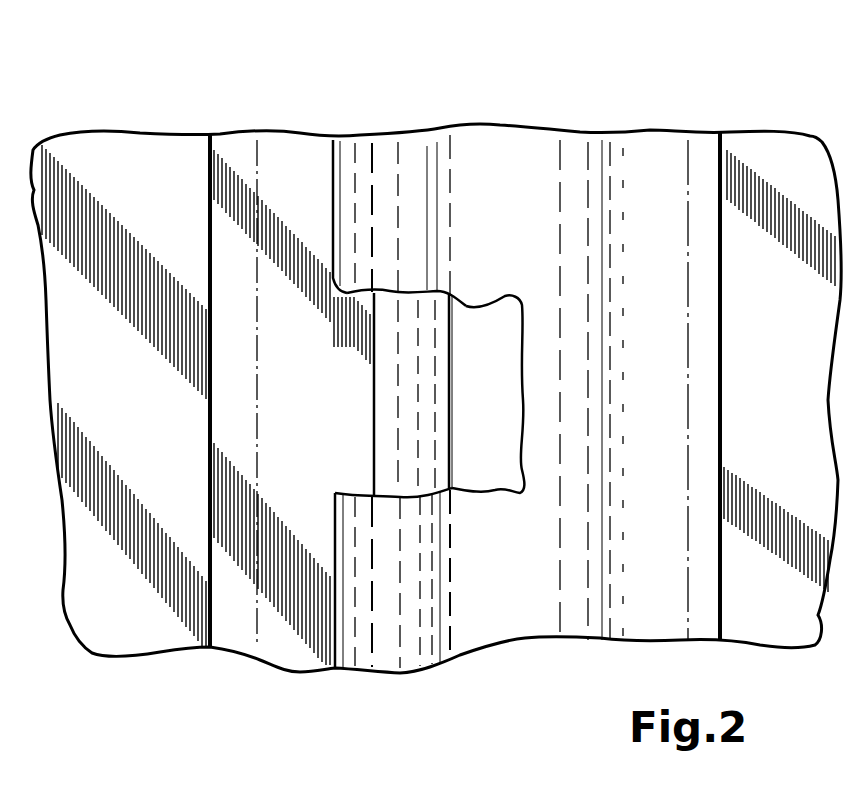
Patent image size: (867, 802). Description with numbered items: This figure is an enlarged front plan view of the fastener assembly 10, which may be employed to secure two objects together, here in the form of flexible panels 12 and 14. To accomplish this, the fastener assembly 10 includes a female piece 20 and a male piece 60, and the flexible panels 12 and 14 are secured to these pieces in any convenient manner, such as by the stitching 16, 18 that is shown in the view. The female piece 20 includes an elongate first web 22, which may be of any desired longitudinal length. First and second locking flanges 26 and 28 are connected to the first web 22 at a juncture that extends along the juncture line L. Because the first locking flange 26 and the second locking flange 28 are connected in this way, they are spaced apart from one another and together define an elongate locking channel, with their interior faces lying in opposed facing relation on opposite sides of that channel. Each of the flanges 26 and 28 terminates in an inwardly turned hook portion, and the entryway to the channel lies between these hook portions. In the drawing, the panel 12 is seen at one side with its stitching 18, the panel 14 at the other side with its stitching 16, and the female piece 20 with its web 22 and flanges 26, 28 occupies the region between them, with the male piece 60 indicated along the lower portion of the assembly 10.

The fastener assembly 10 is at (524, 73).
The flexible panel 12 is at (128, 405).
The flexible panel 14 is at (780, 414).
The stitching 16 is at (690, 313).
The stitching 18 is at (257, 300).
The female piece 20 is at (505, 625).
The first web 22 is at (648, 162).
The first locking flange 26 is at (475, 140).
The second locking flange 28 is at (478, 337).
The male piece 60 is at (305, 663).
The juncture line L is at (560, 137).